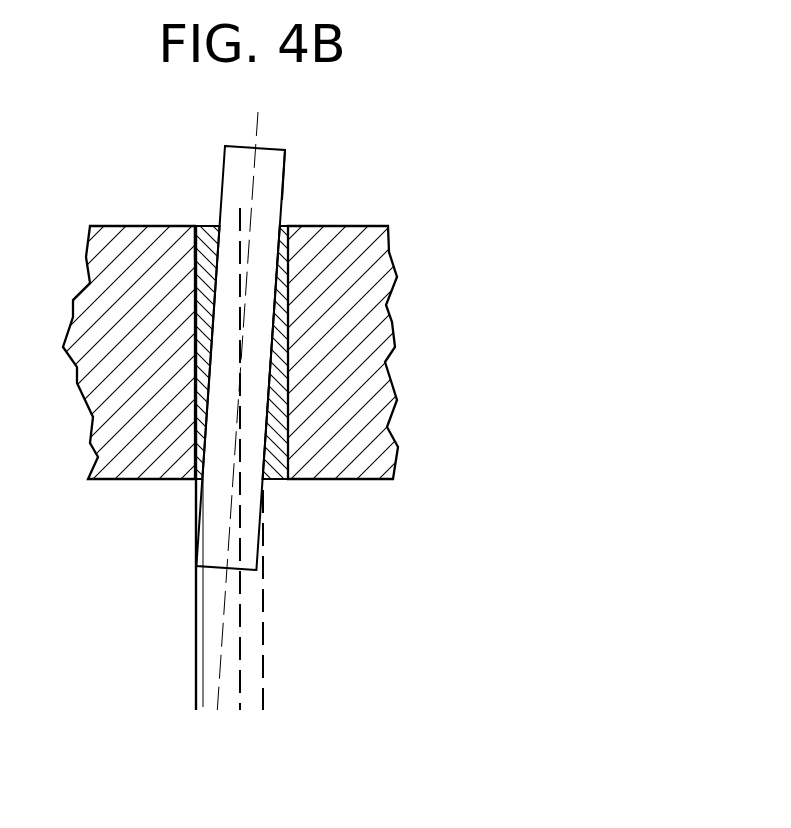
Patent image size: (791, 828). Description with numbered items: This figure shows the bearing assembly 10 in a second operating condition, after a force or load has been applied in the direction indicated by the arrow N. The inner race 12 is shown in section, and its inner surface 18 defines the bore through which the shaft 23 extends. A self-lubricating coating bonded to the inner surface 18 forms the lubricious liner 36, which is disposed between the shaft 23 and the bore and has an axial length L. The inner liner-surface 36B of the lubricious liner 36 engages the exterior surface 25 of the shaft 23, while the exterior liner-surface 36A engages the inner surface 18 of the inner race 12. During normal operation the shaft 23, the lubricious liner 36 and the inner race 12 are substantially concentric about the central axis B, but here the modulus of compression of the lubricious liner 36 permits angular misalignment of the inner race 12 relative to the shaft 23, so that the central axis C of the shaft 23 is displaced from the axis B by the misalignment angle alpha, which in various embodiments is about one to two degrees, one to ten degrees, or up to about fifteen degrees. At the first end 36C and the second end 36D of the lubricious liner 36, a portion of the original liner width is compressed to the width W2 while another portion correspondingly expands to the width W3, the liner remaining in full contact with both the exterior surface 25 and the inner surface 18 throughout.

The bearing assembly 10 is at (92, 133).
The inner race 12 is at (138, 340).
The inner surface 18 is at (205, 240).
The shaft 23 is at (287, 160).
The exterior surface 25 is at (286, 191).
The lubricious liner 36 is at (192, 256).
The exterior liner-surface 36A is at (283, 428).
The inner liner-surface 36B is at (265, 395).
The first end 36C is at (290, 218).
The second end 36D is at (200, 223).
The compressed width W2 is at (234, 459).
The expanded width W3 is at (226, 468).
The axial length L is at (207, 225).
The central axis of shaft C is at (233, 416).
The central axis B is at (247, 478).
The direction of force N is at (312, 598).
The misalignment angle alpha is at (150, 615).